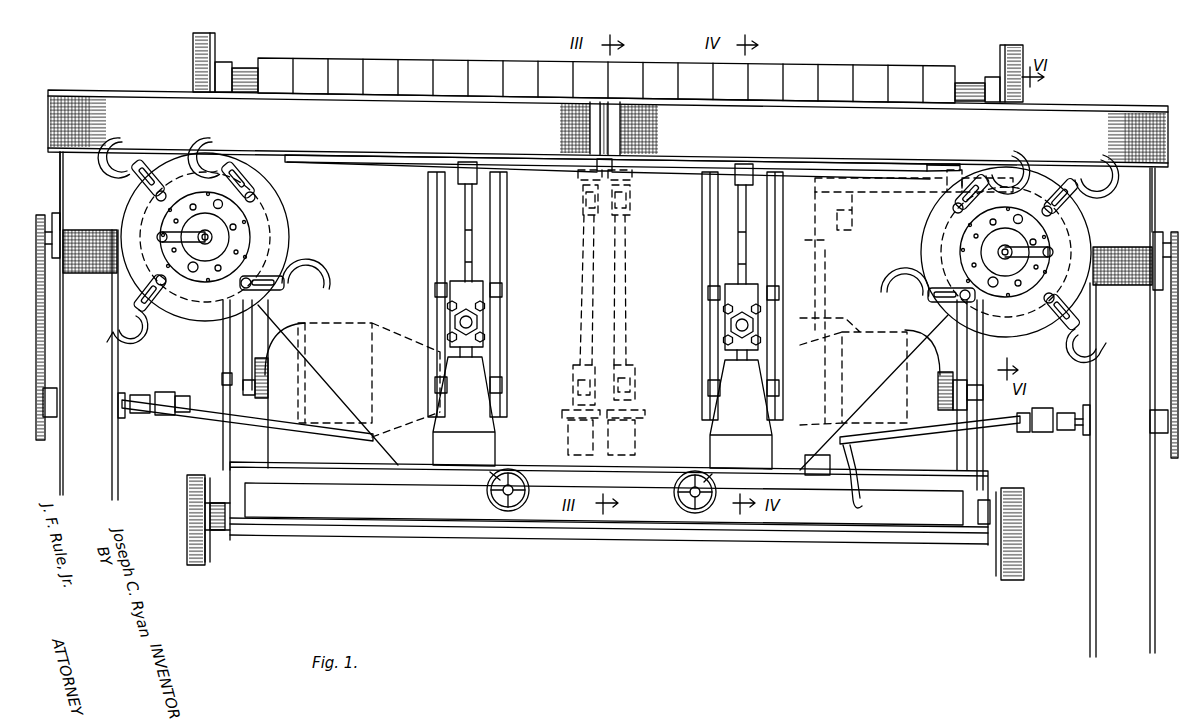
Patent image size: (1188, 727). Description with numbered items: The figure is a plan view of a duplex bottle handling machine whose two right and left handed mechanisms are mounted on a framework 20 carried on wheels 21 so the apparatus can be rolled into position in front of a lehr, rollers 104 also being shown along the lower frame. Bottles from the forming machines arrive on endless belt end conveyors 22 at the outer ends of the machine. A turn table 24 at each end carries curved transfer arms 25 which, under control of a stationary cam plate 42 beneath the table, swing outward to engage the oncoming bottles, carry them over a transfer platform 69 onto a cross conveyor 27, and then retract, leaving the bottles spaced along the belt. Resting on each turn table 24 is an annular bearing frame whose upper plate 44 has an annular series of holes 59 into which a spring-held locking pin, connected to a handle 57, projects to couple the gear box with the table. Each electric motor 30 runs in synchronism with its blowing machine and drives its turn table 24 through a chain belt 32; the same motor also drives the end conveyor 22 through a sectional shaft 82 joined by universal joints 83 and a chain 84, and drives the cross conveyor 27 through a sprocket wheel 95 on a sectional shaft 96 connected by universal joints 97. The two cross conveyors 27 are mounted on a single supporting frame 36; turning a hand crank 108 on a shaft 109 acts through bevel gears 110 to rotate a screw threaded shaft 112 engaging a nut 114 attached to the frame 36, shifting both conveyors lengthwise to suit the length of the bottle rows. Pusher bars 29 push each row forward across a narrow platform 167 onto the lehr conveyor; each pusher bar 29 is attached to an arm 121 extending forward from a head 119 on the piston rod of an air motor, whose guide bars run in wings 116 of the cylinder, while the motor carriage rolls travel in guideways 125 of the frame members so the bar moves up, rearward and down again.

The framework 20 is at (392, 490).
The wheels 21 is at (210, 550).
The endless belt conveyor 22 is at (100, 480).
The turn table 24 is at (280, 232).
The transfer arm 25 is at (318, 270).
The cross conveyor 27 is at (518, 120).
The pusher bar 29 is at (465, 151).
The electric motor 30 is at (318, 388).
The chain belt 32 is at (250, 356).
The supporting frame 36 is at (1080, 108).
The stationary cam plate 42 is at (1070, 343).
The upper plate 44 is at (966, 246).
The handle 57 is at (157, 237).
The holes 59 is at (247, 240).
The transfer platform 69 is at (75, 194).
The shaft 82 is at (218, 422).
The universal joints 83 is at (158, 394).
The chain 84 is at (45, 332).
The sprocket wheel 95 is at (636, 418).
The shaft 96 is at (595, 308).
The universal joints 97 is at (592, 390).
The roller 104 is at (513, 512).
The hand crank 108 is at (860, 507).
The shaft 109 is at (835, 320).
The bevel gears 110 is at (858, 200).
The shaft 112 is at (880, 172).
The nut 114 is at (958, 170).
The wings 116 is at (742, 368).
The head 119 is at (470, 323).
The arm 121 is at (472, 246).
The guideways 125 is at (503, 363).
The narrow platform 167 is at (435, 72).